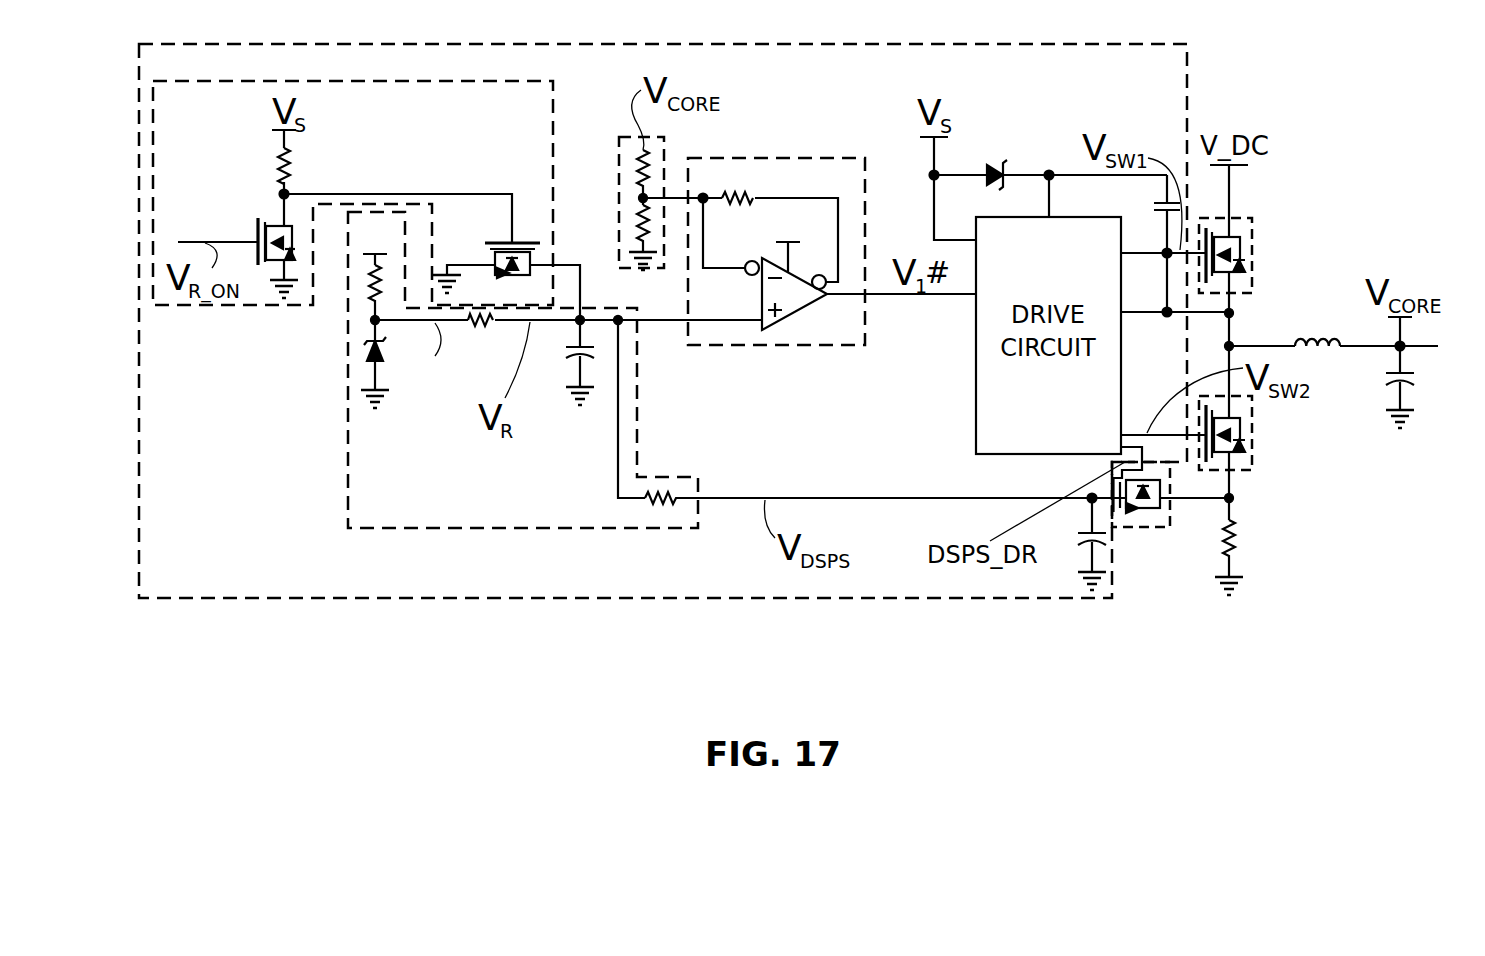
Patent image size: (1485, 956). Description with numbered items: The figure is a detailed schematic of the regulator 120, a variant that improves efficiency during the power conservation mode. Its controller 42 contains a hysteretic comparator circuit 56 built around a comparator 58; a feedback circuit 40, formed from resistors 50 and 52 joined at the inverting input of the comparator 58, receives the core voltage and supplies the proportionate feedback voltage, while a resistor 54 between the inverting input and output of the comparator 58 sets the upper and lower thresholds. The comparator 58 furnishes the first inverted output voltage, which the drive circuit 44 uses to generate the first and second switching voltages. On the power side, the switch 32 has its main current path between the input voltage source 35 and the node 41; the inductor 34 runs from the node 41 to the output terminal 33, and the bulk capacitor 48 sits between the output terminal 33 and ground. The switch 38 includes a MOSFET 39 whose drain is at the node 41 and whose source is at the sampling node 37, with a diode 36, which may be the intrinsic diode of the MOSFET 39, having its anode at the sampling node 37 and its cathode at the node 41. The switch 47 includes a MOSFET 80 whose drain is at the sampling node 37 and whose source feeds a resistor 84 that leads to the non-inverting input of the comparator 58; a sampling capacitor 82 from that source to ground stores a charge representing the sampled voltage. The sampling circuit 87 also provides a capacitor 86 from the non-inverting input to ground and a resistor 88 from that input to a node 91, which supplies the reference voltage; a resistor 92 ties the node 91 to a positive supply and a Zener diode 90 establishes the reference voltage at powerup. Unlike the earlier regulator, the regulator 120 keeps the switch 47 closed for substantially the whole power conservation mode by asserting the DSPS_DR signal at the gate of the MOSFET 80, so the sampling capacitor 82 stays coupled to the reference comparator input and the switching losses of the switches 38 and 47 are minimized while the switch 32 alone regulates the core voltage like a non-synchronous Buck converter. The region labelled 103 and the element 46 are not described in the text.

The controller 42 is at (815, 600).
The reference enable circuit 103 is at (160, 306).
The sampling circuit 87 is at (565, 530).
The resistor 92 is at (375, 283).
The node 91 is at (375, 318).
The Zener diode 90 is at (370, 350).
The resistor 88 is at (492, 326).
The capacitor 86 is at (570, 358).
The feedback circuit 40 is at (618, 160).
The resistor 50 is at (650, 152).
The resistor 52 is at (636, 218).
The hysteretic comparator circuit 56 is at (810, 346).
The resistor 54 is at (740, 195).
The comparator 58 is at (760, 310).
The drive circuit 44 is at (1125, 352).
The input voltage source 35 is at (1218, 234).
The switch 32 is at (1255, 240).
The node 41 is at (1236, 310).
The inductor 34 is at (1295, 338).
The output terminal 33 is at (1425, 344).
The bulk capacitor 48 is at (1415, 385).
The diode 36 is at (1242, 424).
The switch 38 is at (1255, 445).
The MOSFET 39 is at (1225, 455).
The sampling node 37 is at (1235, 500).
The sense resistor 46 is at (1238, 546).
The switch 47 is at (1157, 529).
The MOSFET 80 is at (1162, 487).
The sampling capacitor 82 is at (1082, 536).
The resistor 84 is at (663, 505).
The regulator 120 is at (1160, 617).